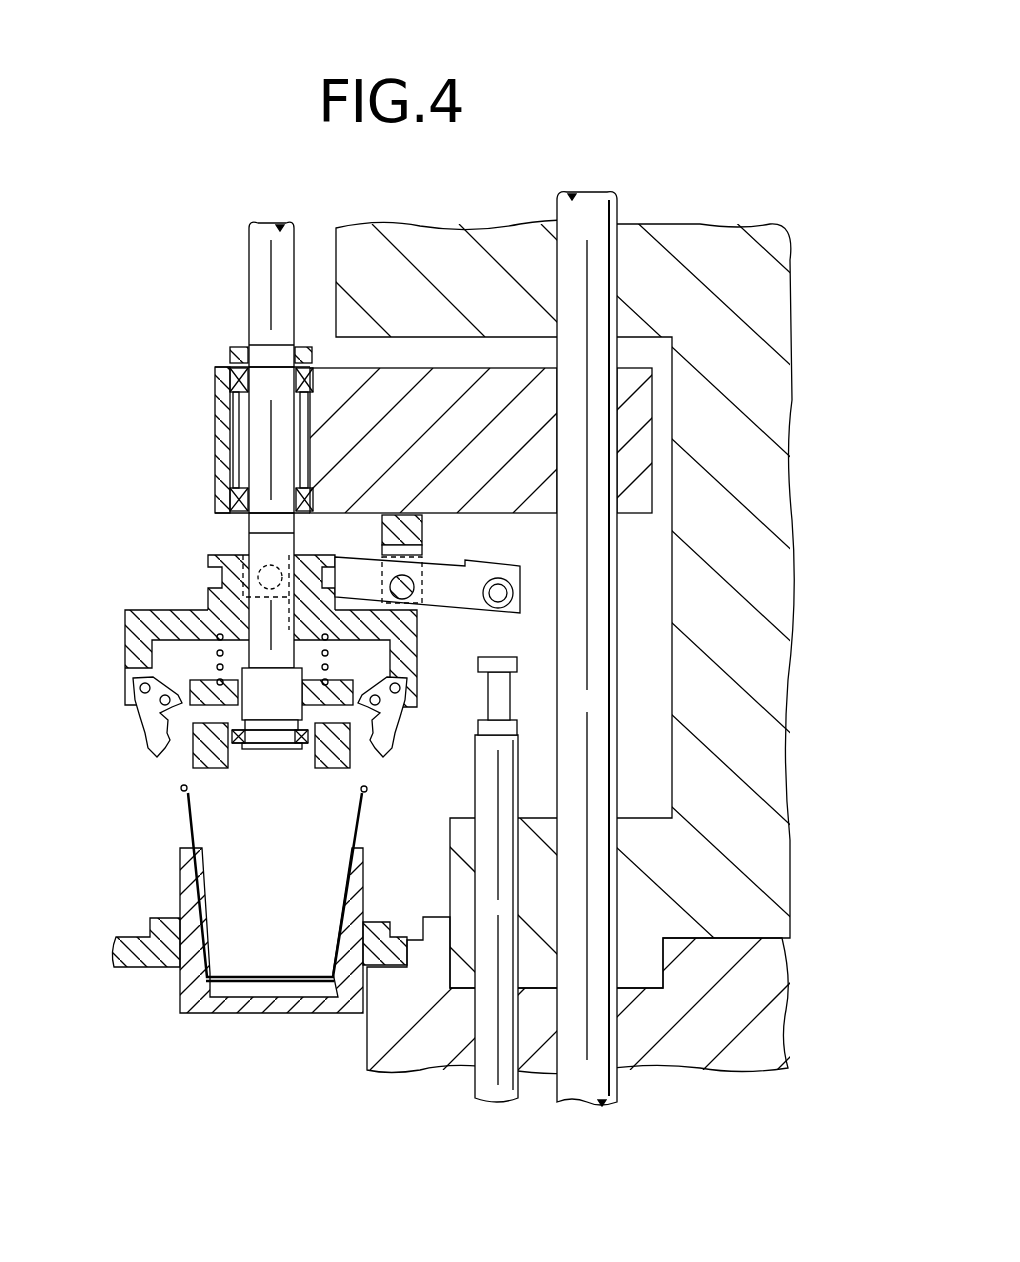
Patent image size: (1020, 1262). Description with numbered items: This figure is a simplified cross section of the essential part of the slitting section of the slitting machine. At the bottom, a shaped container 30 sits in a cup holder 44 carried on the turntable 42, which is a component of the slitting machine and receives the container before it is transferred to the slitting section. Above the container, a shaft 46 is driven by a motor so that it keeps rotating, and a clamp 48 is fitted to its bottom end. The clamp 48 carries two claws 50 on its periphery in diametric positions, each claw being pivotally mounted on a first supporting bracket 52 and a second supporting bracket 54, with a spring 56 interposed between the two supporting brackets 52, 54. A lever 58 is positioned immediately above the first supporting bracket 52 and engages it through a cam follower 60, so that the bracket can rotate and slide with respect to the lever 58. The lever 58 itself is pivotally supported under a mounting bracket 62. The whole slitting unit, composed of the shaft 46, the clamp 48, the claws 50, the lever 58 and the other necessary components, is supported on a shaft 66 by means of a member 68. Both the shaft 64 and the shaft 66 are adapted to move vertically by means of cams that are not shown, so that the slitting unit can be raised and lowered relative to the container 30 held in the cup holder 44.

The shaped container 30 is at (184, 800).
The turntable 42 is at (128, 967).
The cup holder 44 is at (180, 882).
The shaft 46 is at (247, 262).
The clamp 48 is at (222, 776).
The claws 50 is at (148, 735).
The first supporting bracket 52 is at (124, 630).
The second supporting bracket 54 is at (347, 673).
The spring 56 is at (212, 648).
The lever 58 is at (457, 560).
The cam follower 60 is at (270, 566).
The mounting bracket 62 is at (422, 530).
The shaft 64 is at (475, 770).
The shaft 66 is at (617, 708).
The member 68 is at (215, 392).